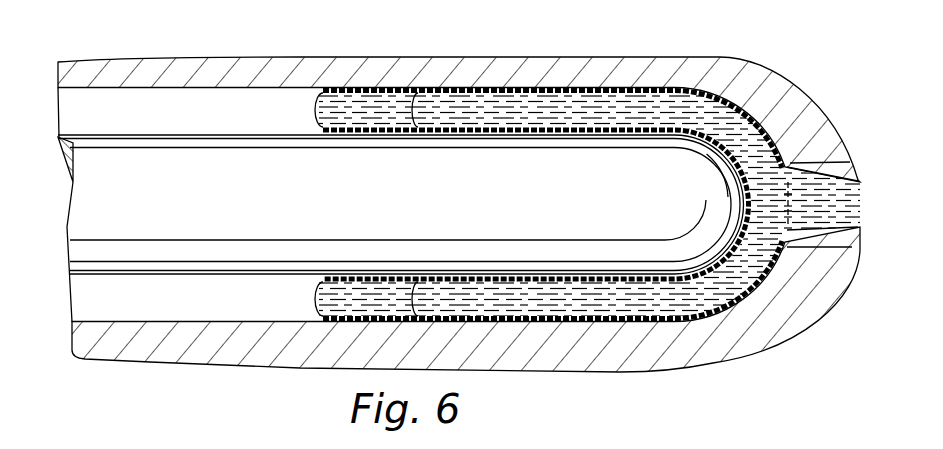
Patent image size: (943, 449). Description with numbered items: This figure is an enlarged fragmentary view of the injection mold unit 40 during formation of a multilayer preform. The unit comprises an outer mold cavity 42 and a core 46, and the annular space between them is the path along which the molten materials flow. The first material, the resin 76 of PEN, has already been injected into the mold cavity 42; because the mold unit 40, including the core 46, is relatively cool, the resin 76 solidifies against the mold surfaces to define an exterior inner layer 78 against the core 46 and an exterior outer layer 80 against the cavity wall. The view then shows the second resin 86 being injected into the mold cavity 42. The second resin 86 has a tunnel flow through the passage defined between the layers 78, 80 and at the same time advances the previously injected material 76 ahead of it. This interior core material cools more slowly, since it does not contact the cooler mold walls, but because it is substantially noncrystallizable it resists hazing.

The injection mold unit 40 is at (206, 54).
The outer mold cavity 42 is at (282, 110).
The core 46 is at (227, 262).
The resin 76 is at (380, 113).
The inner layer 78 is at (637, 133).
The outer layer 80 is at (664, 56).
The second resin 86 is at (562, 110).